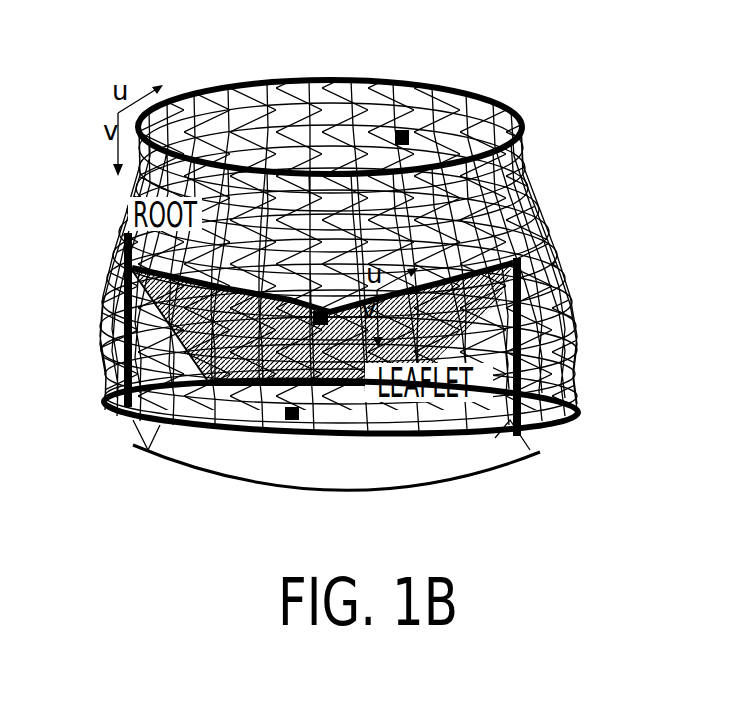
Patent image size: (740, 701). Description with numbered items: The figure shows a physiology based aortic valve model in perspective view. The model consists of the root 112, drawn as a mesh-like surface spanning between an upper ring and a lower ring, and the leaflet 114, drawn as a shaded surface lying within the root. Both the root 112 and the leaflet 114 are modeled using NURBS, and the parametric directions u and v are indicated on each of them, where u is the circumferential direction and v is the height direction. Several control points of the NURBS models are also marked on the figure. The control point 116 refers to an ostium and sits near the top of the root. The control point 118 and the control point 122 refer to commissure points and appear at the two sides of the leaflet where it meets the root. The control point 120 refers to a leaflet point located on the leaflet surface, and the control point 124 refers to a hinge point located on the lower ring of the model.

The root 112 is at (162, 180).
The leaflet 114 is at (220, 318).
The control point 116 is at (412, 118).
The control point 118 is at (113, 272).
The control point 120 is at (402, 275).
The control point 122 is at (535, 272).
The control point 124 is at (299, 442).